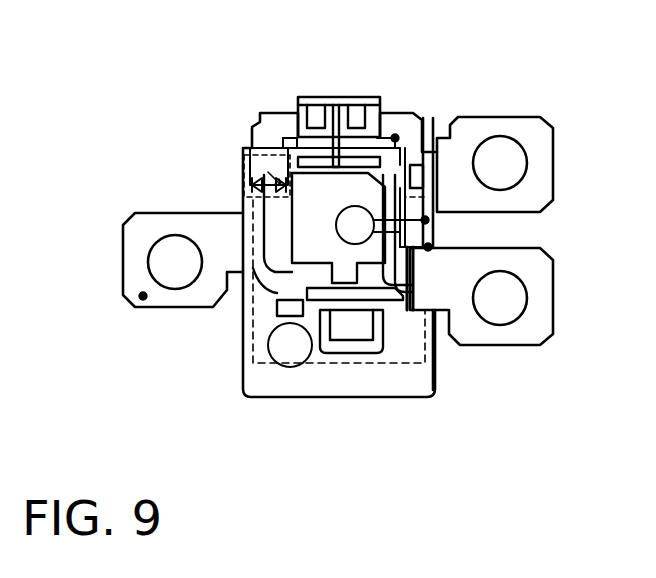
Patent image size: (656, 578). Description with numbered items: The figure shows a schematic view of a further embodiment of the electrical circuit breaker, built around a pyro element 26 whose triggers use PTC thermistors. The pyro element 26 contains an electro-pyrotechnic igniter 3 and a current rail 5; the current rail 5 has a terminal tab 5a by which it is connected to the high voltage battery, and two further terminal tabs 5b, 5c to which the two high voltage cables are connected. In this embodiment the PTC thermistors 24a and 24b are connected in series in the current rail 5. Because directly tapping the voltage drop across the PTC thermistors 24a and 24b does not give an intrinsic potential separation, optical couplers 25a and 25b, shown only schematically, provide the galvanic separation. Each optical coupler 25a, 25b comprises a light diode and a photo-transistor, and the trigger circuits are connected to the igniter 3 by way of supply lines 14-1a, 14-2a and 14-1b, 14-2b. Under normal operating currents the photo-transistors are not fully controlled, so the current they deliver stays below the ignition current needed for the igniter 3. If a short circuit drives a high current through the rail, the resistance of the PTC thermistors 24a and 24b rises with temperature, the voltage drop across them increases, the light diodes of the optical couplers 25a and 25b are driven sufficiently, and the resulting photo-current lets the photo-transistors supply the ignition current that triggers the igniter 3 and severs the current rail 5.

The electro-pyrotechnic igniter 3 is at (337, 149).
The current rail 5 is at (143, 296).
The terminal tab 5a is at (143, 296).
The terminal tab 5b is at (532, 193).
The terminal tab 5c is at (532, 320).
The supply line 14-1a is at (287, 138).
The supply line 14-1b is at (303, 149).
The supply line 14-2a is at (377, 283).
The supply line 14-2b is at (377, 138).
The PTC thermistor 24a is at (292, 364).
The PTC thermistor 24b is at (340, 232).
The optical coupler 25a is at (266, 168).
The optical coupler 25b is at (417, 178).
The pyro element 26 is at (378, 382).